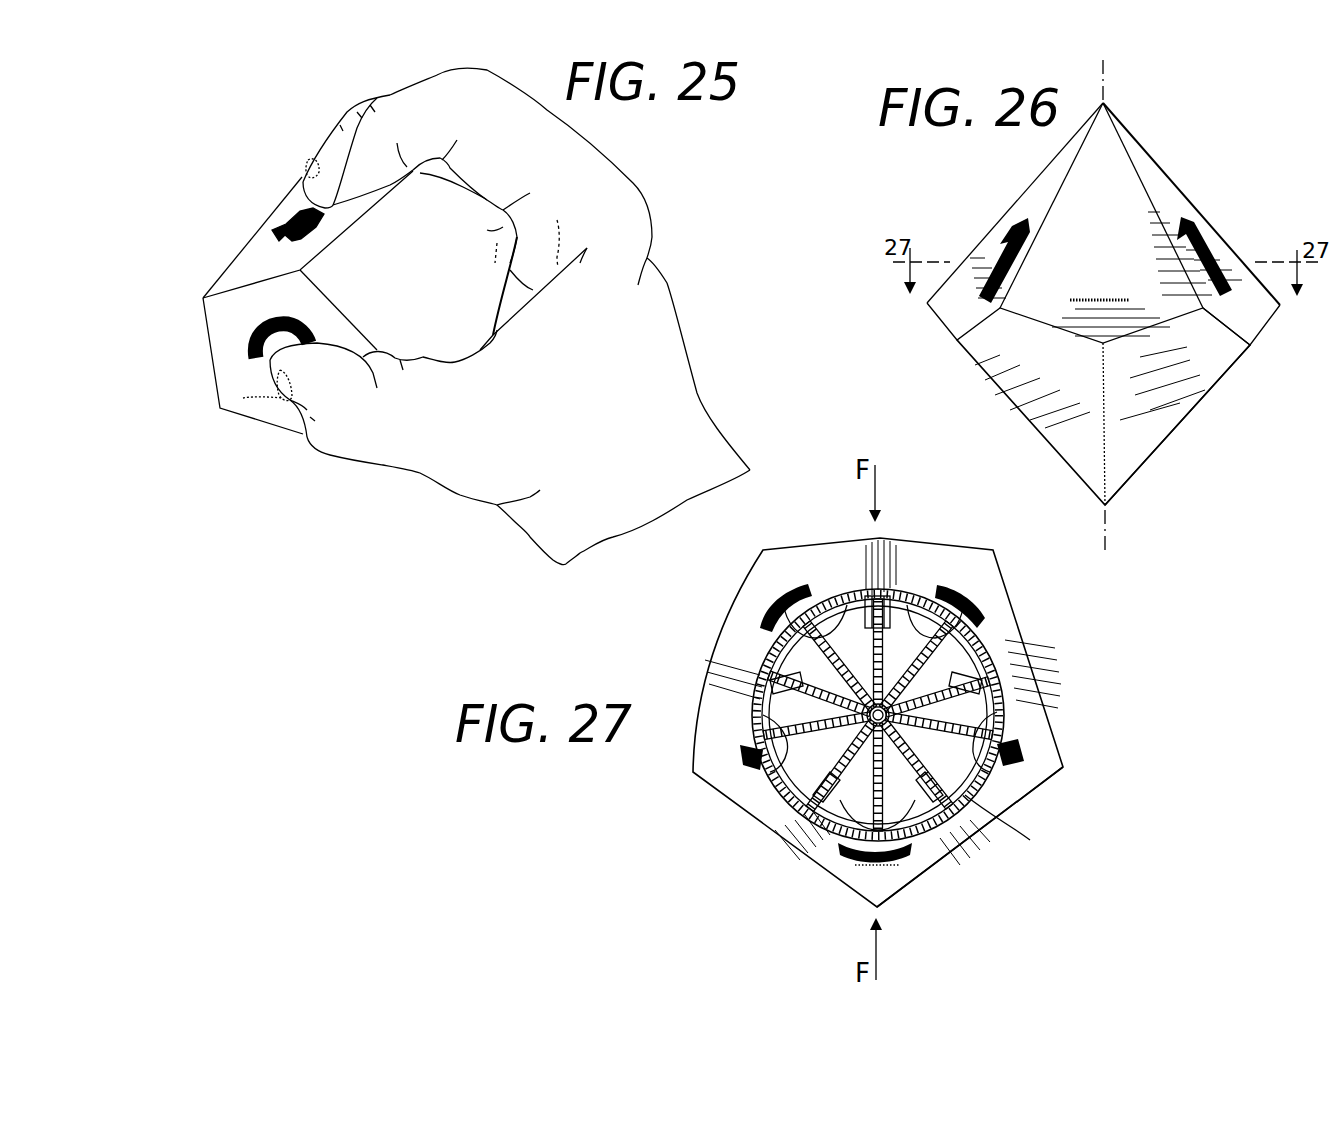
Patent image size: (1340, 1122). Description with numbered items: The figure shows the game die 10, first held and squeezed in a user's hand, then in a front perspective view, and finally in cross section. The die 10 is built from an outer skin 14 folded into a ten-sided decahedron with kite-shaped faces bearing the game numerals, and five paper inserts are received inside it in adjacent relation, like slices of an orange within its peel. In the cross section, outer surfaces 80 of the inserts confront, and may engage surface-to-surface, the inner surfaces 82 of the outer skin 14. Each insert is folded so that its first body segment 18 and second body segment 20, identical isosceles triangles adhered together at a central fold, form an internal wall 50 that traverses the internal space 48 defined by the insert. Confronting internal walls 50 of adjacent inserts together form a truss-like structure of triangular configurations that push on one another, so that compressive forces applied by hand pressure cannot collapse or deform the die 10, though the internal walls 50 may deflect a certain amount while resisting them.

In FIG. 25, the die 10 is at (258, 203).
In FIG. 26, the die 10 is at (1220, 198).
In FIG. 26, the outer skin 14 is at (1210, 342).
In FIG. 27, the outer skin 14 is at (982, 565).
In FIG. 27, the first body segment 18 is at (893, 600).
In FIG. 27, the second body segment 20 is at (985, 655).
In FIG. 27, the internal space 48 is at (797, 663).
In FIG. 27, the internal wall 50 is at (850, 588).
In FIG. 27, the outer surfaces 80 is at (988, 793).
In FIG. 27, the inner surfaces 82 is at (970, 797).